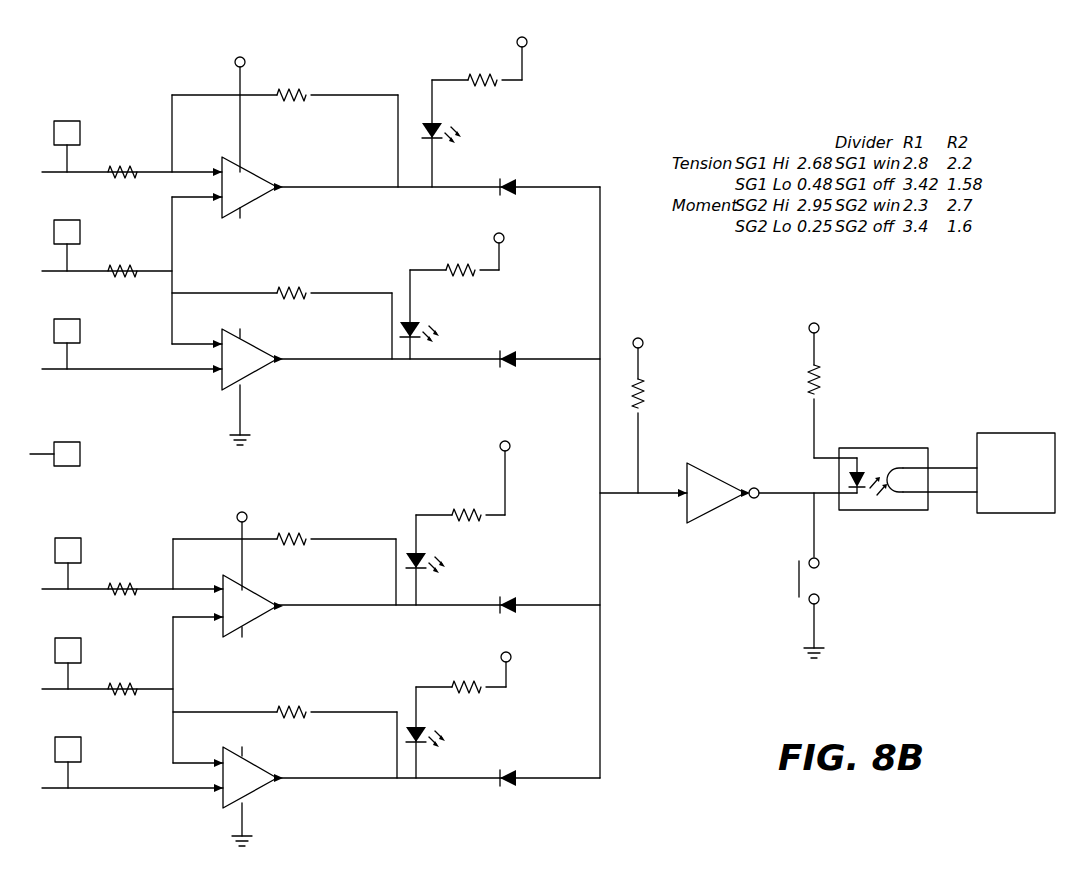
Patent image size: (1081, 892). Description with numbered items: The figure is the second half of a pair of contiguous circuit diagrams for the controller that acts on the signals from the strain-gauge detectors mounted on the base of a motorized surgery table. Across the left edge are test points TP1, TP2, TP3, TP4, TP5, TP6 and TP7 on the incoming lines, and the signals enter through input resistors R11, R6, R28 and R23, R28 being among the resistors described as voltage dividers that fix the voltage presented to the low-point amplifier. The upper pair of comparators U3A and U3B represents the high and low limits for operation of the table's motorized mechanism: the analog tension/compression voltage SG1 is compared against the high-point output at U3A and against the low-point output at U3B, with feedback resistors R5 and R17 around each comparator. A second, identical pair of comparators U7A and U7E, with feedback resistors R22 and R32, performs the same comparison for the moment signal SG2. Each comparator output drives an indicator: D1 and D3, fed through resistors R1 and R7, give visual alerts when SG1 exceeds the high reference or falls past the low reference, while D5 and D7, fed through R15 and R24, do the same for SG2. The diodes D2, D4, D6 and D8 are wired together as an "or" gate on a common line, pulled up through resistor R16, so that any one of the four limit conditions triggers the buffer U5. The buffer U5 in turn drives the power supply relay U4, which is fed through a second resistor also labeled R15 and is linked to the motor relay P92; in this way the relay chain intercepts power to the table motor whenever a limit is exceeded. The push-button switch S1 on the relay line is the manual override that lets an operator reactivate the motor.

The test point 1 TP1 is at (69, 136).
The test point 2 TP2 is at (69, 235).
The test point 3 TP3 is at (69, 334).
The test point 4 TP4 is at (57, 444).
The test point 5 TP5 is at (70, 553).
The test point 6 TP6 is at (70, 653).
The test point 7 TP7 is at (70, 752).
The 1.00K input resistor R11 is at (127, 172).
The 1.00K input resistor R6 is at (127, 270).
The voltage divider resistor R28 is at (127, 589).
The 1.00K input resistor R23 is at (127, 688).
The 100K feedback resistor R5 is at (285, 127).
The 100K feedback resistor R17 is at (282, 312).
The 100K feedback resistor R22 is at (284, 558).
The 100K feedback resistor R32 is at (285, 731).
The 352 ohm LED resistor R1 is at (486, 61).
The 532 ohm LED resistor R7 is at (464, 253).
The 332 ohm / 249 ohm resistor R15 is at (659, 422).
The 332 ohm LED resistor R24 is at (470, 673).
The 10.0K pull-up resistor R16 is at (662, 404).
The comparator U3A is at (300, 127).
The comparator U3B is at (300, 391).
The LM393ADR comparator U7A is at (300, 564).
The LM393ADR comparator U7E is at (300, 800).
The buffer U5 is at (754, 496).
The power supply relay U4 is at (895, 478).
The visual alert diode D1 is at (468, 133).
The wired-or diode D2 is at (550, 183).
The visual alert diode D3 is at (448, 314).
The wired-or diode D4 is at (552, 355).
The SG2HI LED D5 is at (451, 560).
The 1N4148WS diode D6 is at (552, 601).
The SG2LO LED D7 is at (453, 732).
The 1N4148WS diode D8 is at (552, 774).
The motor relay P92 is at (1016, 474).
The manual override switch S1 is at (837, 585).